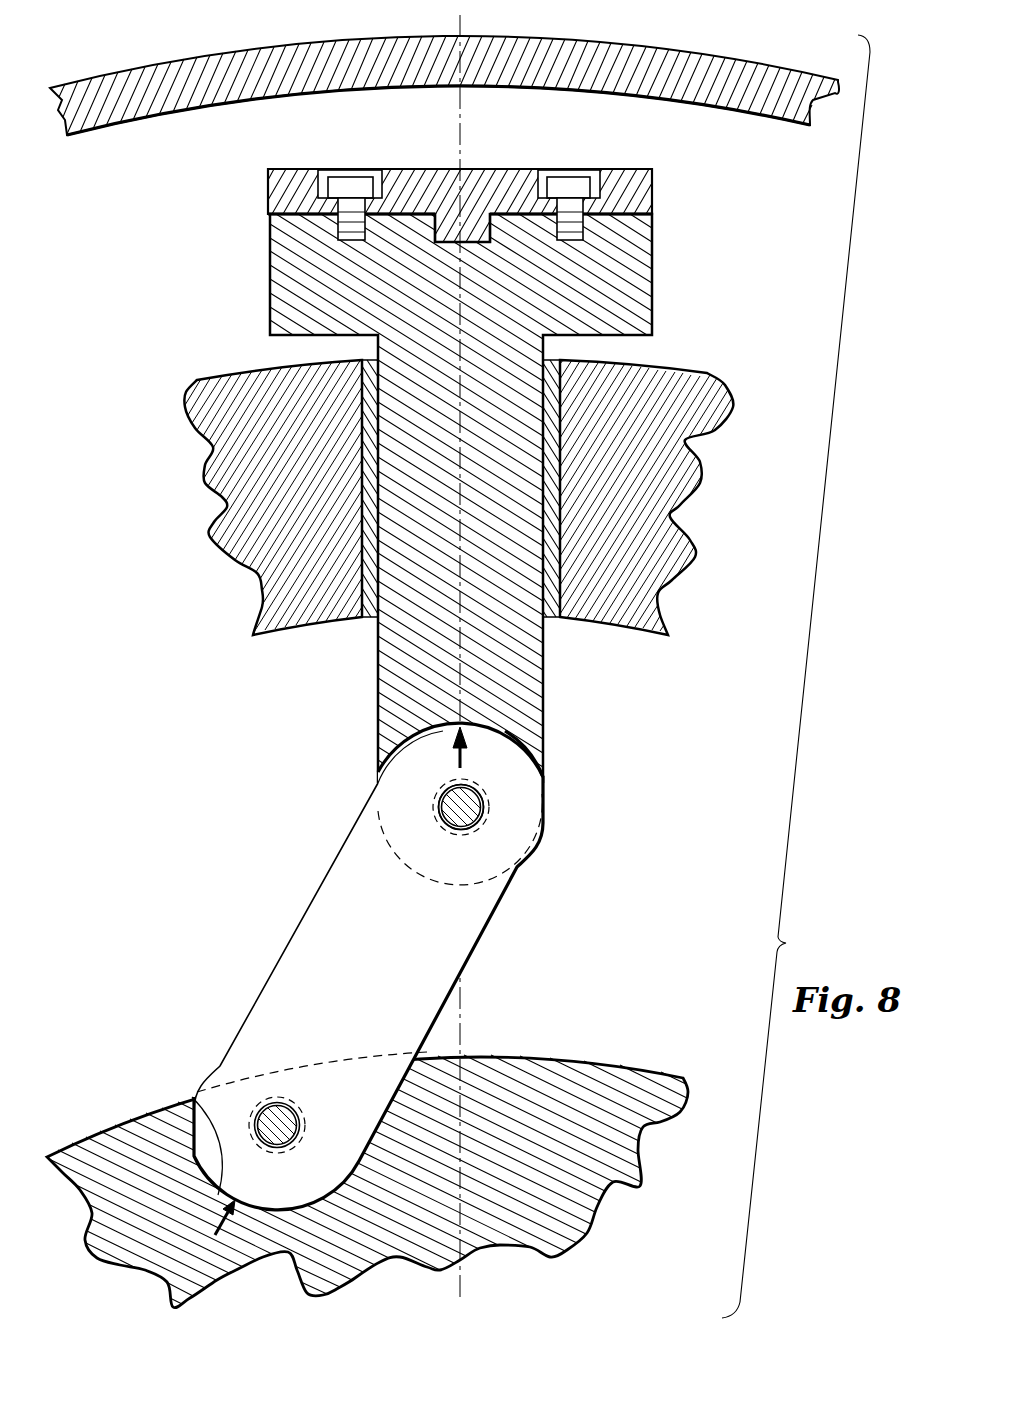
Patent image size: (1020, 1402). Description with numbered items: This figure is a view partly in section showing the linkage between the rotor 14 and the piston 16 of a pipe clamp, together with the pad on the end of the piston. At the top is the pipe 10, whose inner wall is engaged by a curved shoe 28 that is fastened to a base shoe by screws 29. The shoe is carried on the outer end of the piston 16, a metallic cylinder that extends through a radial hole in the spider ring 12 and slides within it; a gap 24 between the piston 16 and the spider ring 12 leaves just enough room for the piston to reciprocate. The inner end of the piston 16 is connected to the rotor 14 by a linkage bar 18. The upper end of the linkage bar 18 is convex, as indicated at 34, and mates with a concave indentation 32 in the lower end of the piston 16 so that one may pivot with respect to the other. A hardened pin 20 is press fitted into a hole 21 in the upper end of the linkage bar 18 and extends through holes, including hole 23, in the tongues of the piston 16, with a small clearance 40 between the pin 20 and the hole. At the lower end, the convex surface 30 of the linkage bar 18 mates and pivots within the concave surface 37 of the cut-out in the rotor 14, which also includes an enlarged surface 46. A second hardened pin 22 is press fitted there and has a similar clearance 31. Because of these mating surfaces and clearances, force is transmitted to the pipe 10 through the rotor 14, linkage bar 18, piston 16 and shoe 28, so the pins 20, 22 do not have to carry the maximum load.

The pipe 10 is at (697, 72).
The spider ring 12 is at (233, 410).
The rotor 14 is at (323, 1270).
The piston 16 is at (505, 687).
The linkage bar 18 is at (412, 955).
The hardened pin 20 is at (450, 825).
The hole 21 is at (450, 800).
The second hardened pin 22 is at (277, 1112).
The hole 23 is at (470, 827).
The gap 24 is at (372, 612).
The curved shoe 28 is at (278, 195).
The screws 29 is at (355, 183).
The convex surface 30 is at (223, 1188).
The clearance 31 is at (302, 1122).
The concave indentation 32 is at (378, 783).
The convex upper end 34 is at (528, 737).
The concave surface 37 is at (200, 1100).
The clearance 40 is at (477, 823).
The enlarged surface 46 is at (413, 1050).